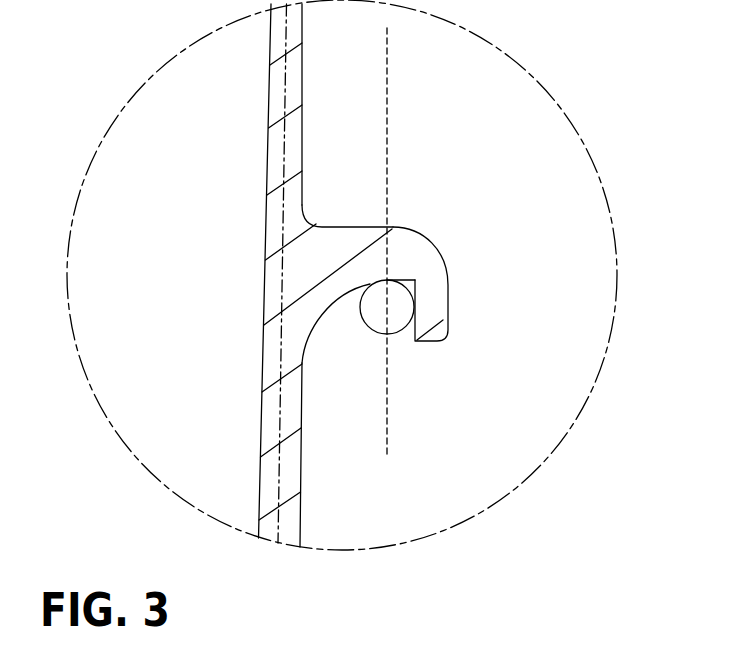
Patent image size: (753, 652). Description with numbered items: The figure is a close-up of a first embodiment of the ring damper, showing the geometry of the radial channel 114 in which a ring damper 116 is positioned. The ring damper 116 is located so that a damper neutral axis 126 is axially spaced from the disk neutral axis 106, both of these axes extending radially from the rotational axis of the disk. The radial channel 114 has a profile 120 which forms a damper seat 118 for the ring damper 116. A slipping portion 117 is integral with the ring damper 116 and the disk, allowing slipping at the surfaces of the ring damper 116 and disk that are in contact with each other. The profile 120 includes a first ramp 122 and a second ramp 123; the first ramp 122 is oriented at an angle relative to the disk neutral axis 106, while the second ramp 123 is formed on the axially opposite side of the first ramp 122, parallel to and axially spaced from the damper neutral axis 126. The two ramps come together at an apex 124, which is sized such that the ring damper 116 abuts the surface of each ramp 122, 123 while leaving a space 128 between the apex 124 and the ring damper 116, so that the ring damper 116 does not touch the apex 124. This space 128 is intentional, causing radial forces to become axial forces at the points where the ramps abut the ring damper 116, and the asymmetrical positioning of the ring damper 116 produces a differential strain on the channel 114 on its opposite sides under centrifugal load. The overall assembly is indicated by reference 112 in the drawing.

The disk neutral axis 106 is at (266, 324).
The ball stud mounting assembly 112 is at (428, 226).
The radial channel 114 is at (413, 281).
The ring damper 116 is at (374, 333).
The slipping portion 117 is at (378, 268).
The damper seat 118 is at (407, 336).
The profile 120 is at (333, 307).
The first ramp 122 is at (346, 292).
The second ramp 123 is at (415, 312).
The apex 124 is at (405, 278).
The damper neutral axis 126 is at (389, 436).
The space 128 is at (414, 285).